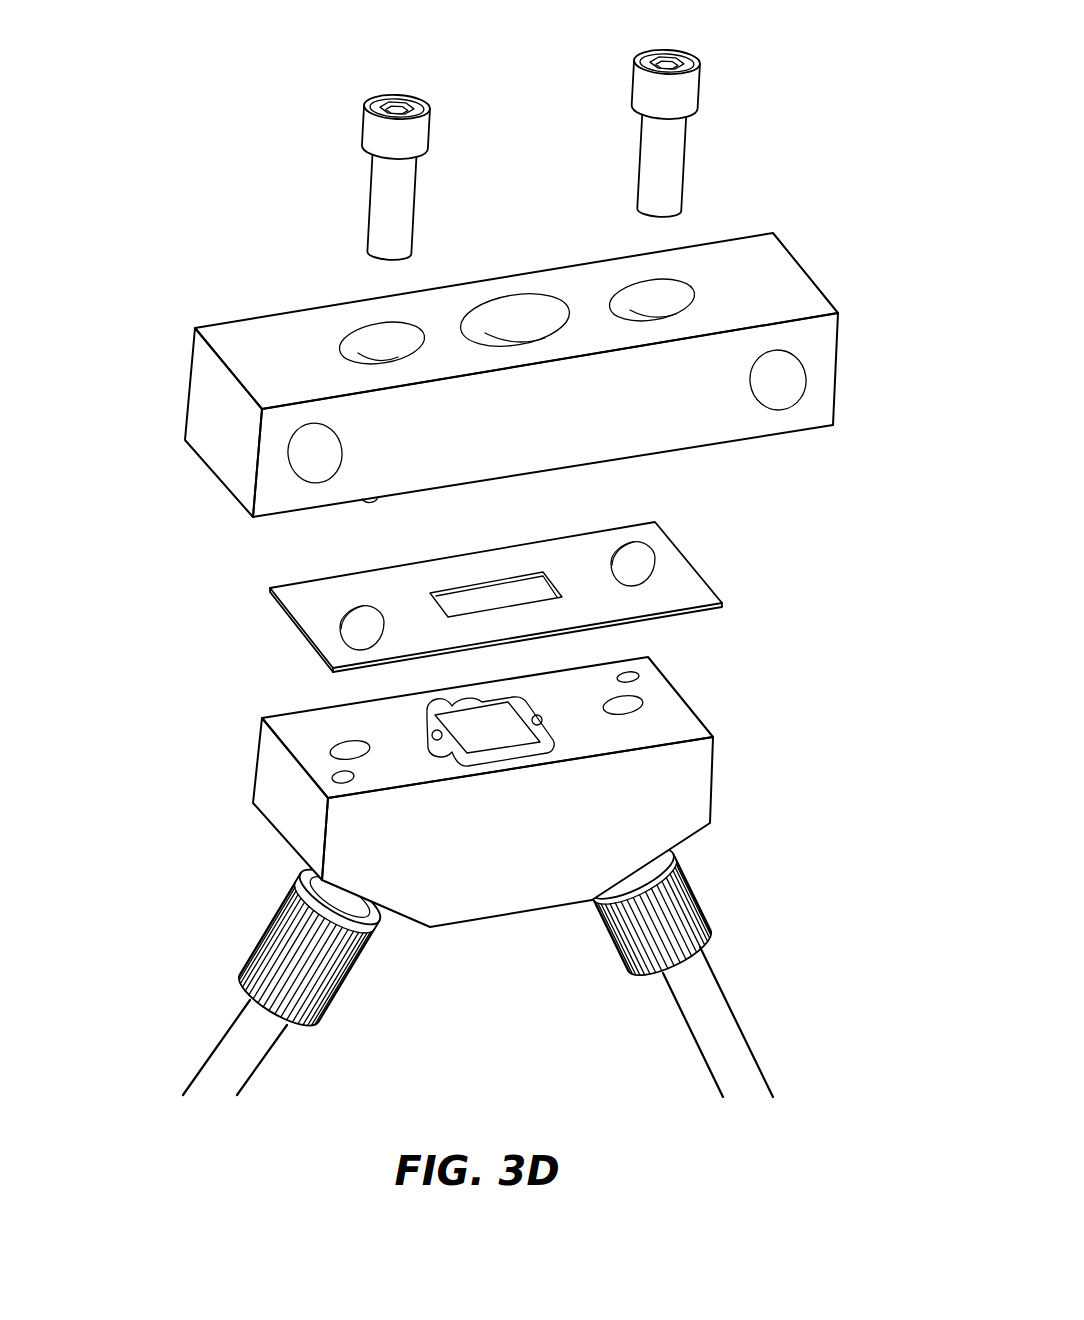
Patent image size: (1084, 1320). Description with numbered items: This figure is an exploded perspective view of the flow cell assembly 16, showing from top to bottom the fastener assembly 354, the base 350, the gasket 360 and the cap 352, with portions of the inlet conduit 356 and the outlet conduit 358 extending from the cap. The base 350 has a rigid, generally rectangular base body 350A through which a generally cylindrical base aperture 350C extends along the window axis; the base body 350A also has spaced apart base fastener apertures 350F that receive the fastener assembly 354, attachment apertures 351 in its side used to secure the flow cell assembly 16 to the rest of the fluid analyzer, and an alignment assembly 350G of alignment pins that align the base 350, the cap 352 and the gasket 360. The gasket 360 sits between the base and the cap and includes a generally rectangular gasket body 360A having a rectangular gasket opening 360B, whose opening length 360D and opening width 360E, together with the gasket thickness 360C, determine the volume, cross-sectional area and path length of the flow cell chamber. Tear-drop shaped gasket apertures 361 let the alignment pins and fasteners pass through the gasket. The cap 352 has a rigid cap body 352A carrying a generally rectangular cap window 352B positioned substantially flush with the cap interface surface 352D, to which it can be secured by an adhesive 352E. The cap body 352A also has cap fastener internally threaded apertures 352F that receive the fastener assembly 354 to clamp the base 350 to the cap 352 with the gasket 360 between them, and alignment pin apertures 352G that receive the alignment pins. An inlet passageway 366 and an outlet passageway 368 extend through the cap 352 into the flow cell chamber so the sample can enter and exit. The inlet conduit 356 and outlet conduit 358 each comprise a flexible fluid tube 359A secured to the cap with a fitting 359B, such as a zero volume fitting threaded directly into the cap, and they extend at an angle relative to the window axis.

The flow cell assembly 16 is at (530, 146).
The fastener assembly 354 is at (383, 190).
The base 350 is at (500, 381).
The base body 350A is at (205, 365).
The base aperture 350C is at (512, 318).
The base fastener apertures 350F is at (372, 340).
The alignment assembly 350G is at (368, 506).
The attachment apertures 351 is at (796, 374).
The gasket 360 is at (489, 574).
The gasket body 360A is at (276, 593).
The gasket opening 360B is at (540, 597).
The gasket thickness 360C is at (755, 570).
The opening length 360D is at (343, 550).
The opening width 360E is at (688, 528).
The gasket apertures 361 is at (637, 546).
The cap 352 is at (501, 808).
The cap body 352A is at (712, 800).
The cap window 352B is at (460, 801).
The cap interface surface 352D is at (693, 728).
The adhesive 352E is at (479, 760).
The cap fastener internally threaded apertures 352F is at (338, 745).
The alignment pin apertures 352G is at (343, 777).
The inlet passageway 366 is at (437, 732).
The outlet passageway 368 is at (537, 718).
The fitting 359B is at (265, 942).
The flexible fluid tube 359A is at (228, 1044).
The inlet conduit 356 is at (263, 1066).
The outlet conduit 358 is at (703, 1058).